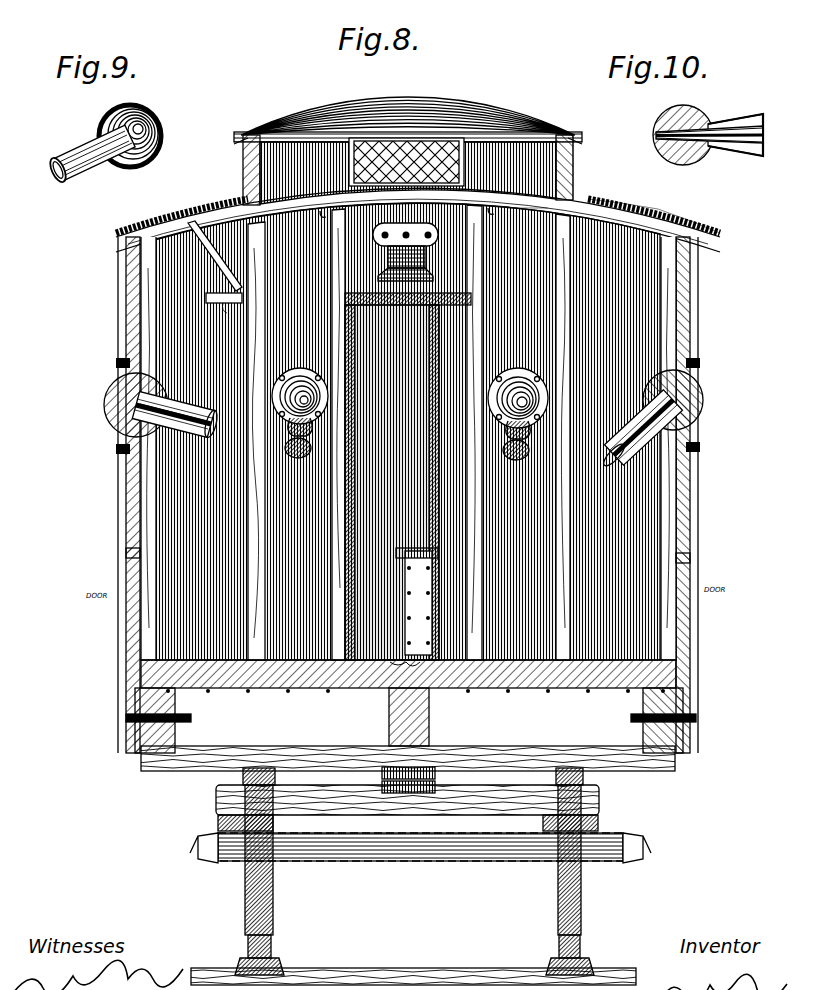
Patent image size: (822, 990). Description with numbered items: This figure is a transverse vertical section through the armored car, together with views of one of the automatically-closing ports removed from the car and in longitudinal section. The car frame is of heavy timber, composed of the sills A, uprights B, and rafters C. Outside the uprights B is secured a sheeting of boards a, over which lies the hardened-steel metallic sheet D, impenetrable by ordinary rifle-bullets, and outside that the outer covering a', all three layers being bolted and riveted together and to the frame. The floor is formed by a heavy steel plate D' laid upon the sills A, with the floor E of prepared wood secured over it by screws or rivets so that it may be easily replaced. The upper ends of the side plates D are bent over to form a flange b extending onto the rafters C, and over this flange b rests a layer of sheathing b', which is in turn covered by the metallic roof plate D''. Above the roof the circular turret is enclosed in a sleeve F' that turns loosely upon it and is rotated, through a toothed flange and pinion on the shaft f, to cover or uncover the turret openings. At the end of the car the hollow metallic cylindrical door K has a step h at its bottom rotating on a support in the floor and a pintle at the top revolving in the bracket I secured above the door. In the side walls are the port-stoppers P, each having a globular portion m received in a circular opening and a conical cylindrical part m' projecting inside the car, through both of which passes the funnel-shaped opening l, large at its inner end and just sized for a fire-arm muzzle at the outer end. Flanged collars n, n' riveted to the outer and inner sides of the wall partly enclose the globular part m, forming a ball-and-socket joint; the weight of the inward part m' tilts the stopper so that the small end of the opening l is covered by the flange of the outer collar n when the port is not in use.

In FIG. 8, the sill A is at (160, 706).
In FIG. 8, the upright B is at (147, 518).
In FIG. 8, the rafter C is at (528, 226).
In FIG. 8, the metallic sheet D is at (405, 498).
In FIG. 8, the steel floor-plate D' is at (374, 717).
In FIG. 8, the roof plate D'' is at (623, 201).
In FIG. 8, the floor E is at (530, 644).
In FIG. 8, the sleeve F' is at (576, 167).
In FIG. 8, the bracket I is at (415, 240).
In FIG. 8, the cylindrical door K is at (352, 367).
In FIG. 8, the port-stopper P is at (100, 378).
In FIG. 9, the port-stopper P is at (75, 108).
In FIG. 8, the sheeting of boards a is at (404, 654).
In FIG. 8, the outer covering a' is at (404, 649).
In FIG. 8, the flange b is at (405, 673).
In FIG. 8, the roof sheathing b' is at (687, 217).
In FIG. 8, the shaft f is at (183, 218).
In FIG. 8, the step h is at (384, 272).
In FIG. 8, the funnel-shaped opening l is at (290, 450).
In FIG. 9, the funnel-shaped opening l is at (42, 160).
In FIG. 10, the funnel-shaped opening l is at (769, 135).
In FIG. 8, the globular portion m is at (662, 419).
In FIG. 9, the globular portion m is at (133, 128).
In FIG. 10, the globular portion m is at (683, 146).
In FIG. 8, the conical cylindrical part m' is at (176, 399).
In FIG. 9, the conical cylindrical part m' is at (94, 153).
In FIG. 10, the conical cylindrical part m' is at (709, 122).
In FIG. 8, the outer flanged collar n is at (400, 399).
In FIG. 8, the inner flanged collar n' is at (470, 388).